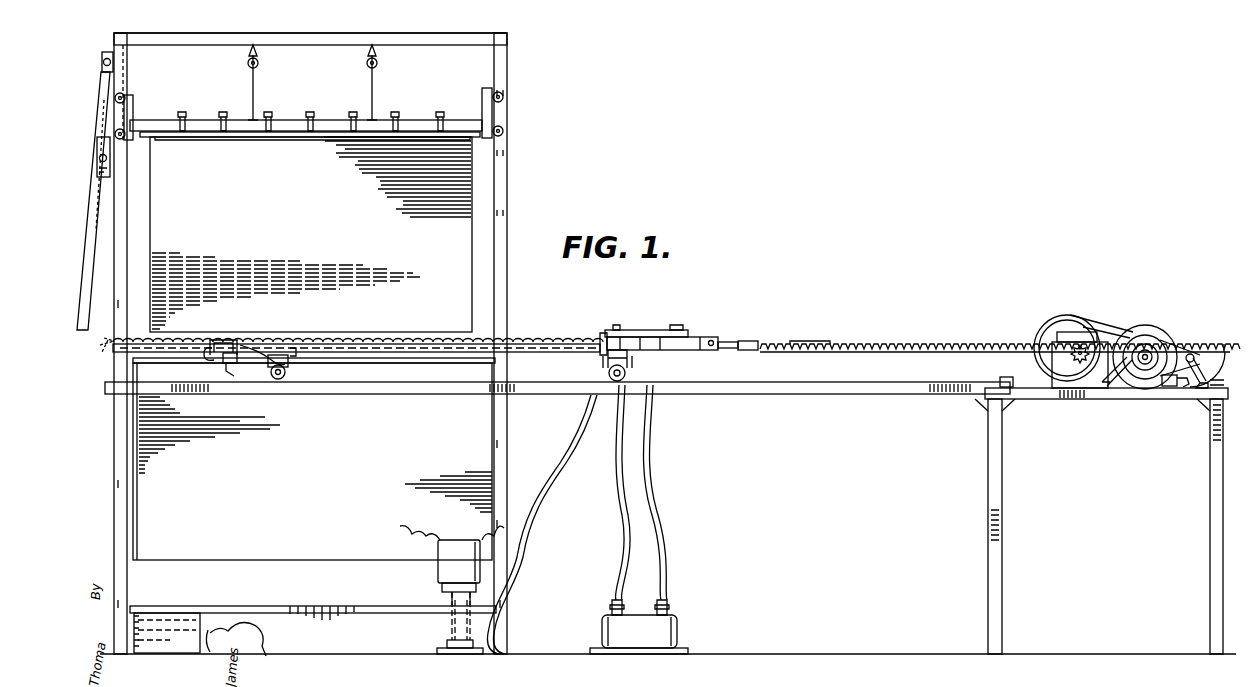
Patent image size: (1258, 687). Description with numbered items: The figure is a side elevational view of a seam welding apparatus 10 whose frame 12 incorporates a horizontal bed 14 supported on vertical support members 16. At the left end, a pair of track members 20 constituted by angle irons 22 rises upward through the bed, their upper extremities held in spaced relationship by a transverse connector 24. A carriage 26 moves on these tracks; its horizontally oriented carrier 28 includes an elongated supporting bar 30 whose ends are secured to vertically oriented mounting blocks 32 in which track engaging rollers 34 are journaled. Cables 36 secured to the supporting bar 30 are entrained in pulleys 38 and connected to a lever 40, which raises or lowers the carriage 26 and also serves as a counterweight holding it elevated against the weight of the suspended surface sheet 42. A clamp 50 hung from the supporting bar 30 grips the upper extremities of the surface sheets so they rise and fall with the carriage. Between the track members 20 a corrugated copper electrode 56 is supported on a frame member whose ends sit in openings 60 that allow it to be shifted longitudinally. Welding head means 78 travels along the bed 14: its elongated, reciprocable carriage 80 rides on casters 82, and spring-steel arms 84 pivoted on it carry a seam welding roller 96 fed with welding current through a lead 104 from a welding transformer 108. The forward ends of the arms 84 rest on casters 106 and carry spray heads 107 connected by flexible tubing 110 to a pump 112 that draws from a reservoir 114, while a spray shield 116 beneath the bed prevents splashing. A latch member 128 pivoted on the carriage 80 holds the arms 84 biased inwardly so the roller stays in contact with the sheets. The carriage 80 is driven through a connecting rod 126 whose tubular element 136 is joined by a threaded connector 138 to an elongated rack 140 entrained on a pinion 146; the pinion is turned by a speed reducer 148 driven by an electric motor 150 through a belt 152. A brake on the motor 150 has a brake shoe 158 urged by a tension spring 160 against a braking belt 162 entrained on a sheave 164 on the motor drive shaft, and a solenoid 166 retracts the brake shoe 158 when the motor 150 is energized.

The apparatus 10 is at (872, 437).
The frame 12 is at (722, 403).
The bed 14 is at (822, 382).
The vertical support members 16 is at (132, 592).
The track members 20 is at (515, 195).
The angle irons 22 is at (504, 228).
The transverse connector 24 is at (503, 42).
The carriage 26 is at (295, 114).
The carrier 28 is at (427, 113).
The supporting bar 30 is at (203, 120).
The mounting blocks 32 is at (132, 106).
The track engaging rollers 34 is at (126, 94).
The cables 36 is at (256, 88).
The pulleys 38 is at (248, 69).
The lever 40 is at (85, 272).
The surface sheet 42 is at (456, 299).
The clamp 50 is at (407, 136).
The electrode 56 is at (140, 338).
The openings 60 is at (112, 350).
The welding head means 78 is at (752, 322).
The carriage 80 is at (602, 334).
The casters 82 is at (606, 392).
The arms 84 is at (307, 342).
The seam welding roller 96 is at (239, 342).
The lead 104 is at (271, 344).
The casters 106 is at (288, 378).
The spray heads 107 is at (216, 340).
The welding transformer 108 is at (676, 630).
The flexible tubing 110 is at (557, 478).
The pump 112 is at (438, 572).
The reservoir 114 is at (392, 659).
The spray shield 116 is at (320, 476).
The connecting rod 126 is at (813, 330).
The latch member 128 is at (646, 328).
The tubular element 136 is at (720, 352).
The threaded connector 138 is at (754, 352).
The elongated rack 140 is at (962, 344).
The pinion 146 is at (1078, 355).
The speed reducer 148 is at (1124, 347).
The electric motor 150 is at (1148, 353).
The belt 152 is at (1092, 322).
The brake shoe 158 is at (1206, 386).
The tension spring 160 is at (1202, 362).
The braking belt 162 is at (1154, 352).
The sheave 164 is at (1122, 370).
The solenoid 166 is at (1172, 388).